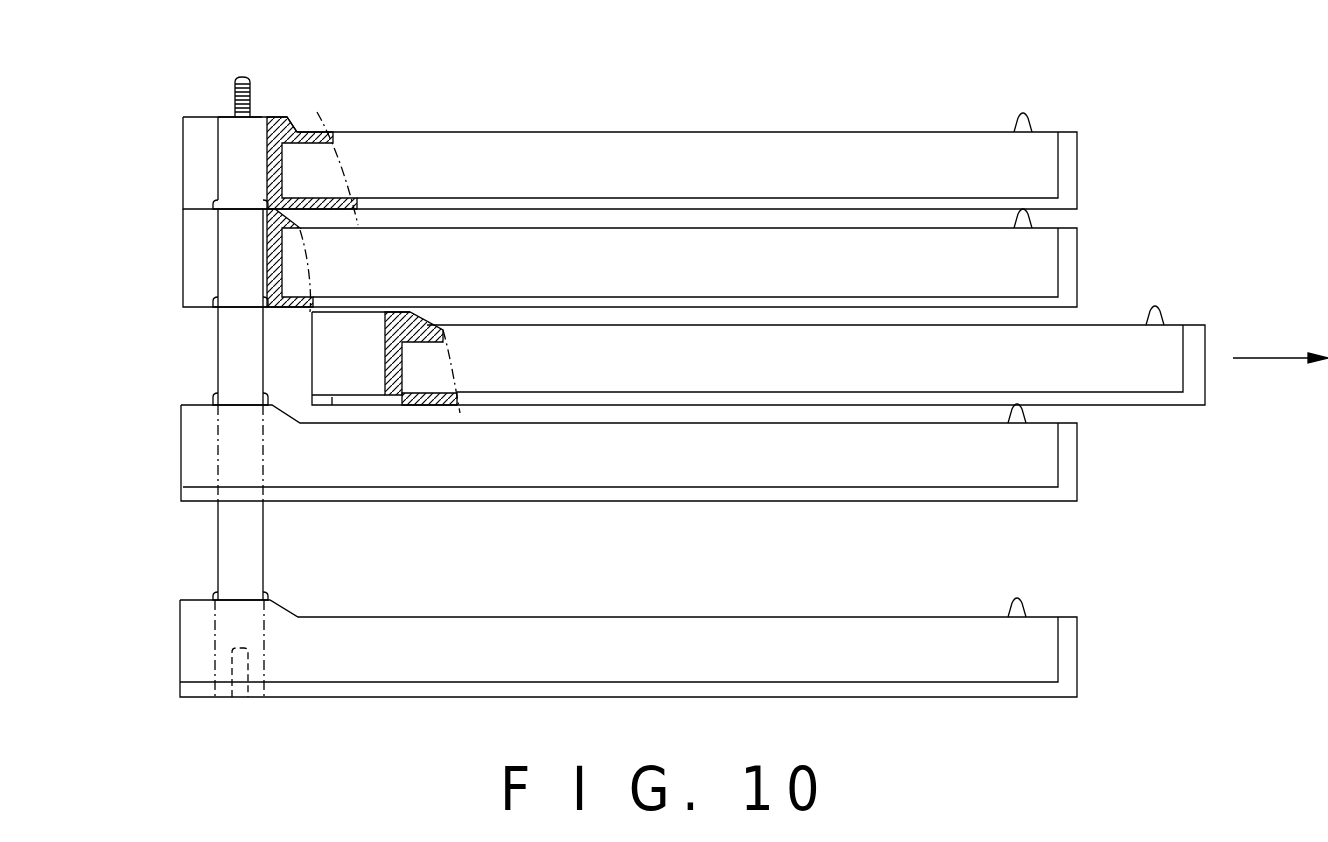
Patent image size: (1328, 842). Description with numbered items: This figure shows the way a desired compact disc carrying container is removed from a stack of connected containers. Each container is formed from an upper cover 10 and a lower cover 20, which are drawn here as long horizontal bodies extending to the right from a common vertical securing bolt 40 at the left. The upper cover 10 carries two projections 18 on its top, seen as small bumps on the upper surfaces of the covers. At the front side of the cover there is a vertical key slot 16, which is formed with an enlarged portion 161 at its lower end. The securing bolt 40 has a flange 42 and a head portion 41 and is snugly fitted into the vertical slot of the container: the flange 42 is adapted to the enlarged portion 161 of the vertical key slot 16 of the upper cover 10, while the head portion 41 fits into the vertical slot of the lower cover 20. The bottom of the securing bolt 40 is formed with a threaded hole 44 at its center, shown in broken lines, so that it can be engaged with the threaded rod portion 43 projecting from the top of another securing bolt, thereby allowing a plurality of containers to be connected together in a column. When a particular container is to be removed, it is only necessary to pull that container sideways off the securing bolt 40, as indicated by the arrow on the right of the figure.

The upper cover 10 is at (330, 137).
The vertical key slot 16 is at (205, 118).
The projection 18 is at (1035, 117).
The lower cover 20 is at (337, 198).
The securing bolt 40 is at (228, 362).
The head portion 41 is at (233, 163).
The flange 42 is at (267, 203).
The threaded rod portion 43 is at (249, 80).
The threaded hole 44 is at (238, 697).
The enlarged portion 161 is at (332, 403).